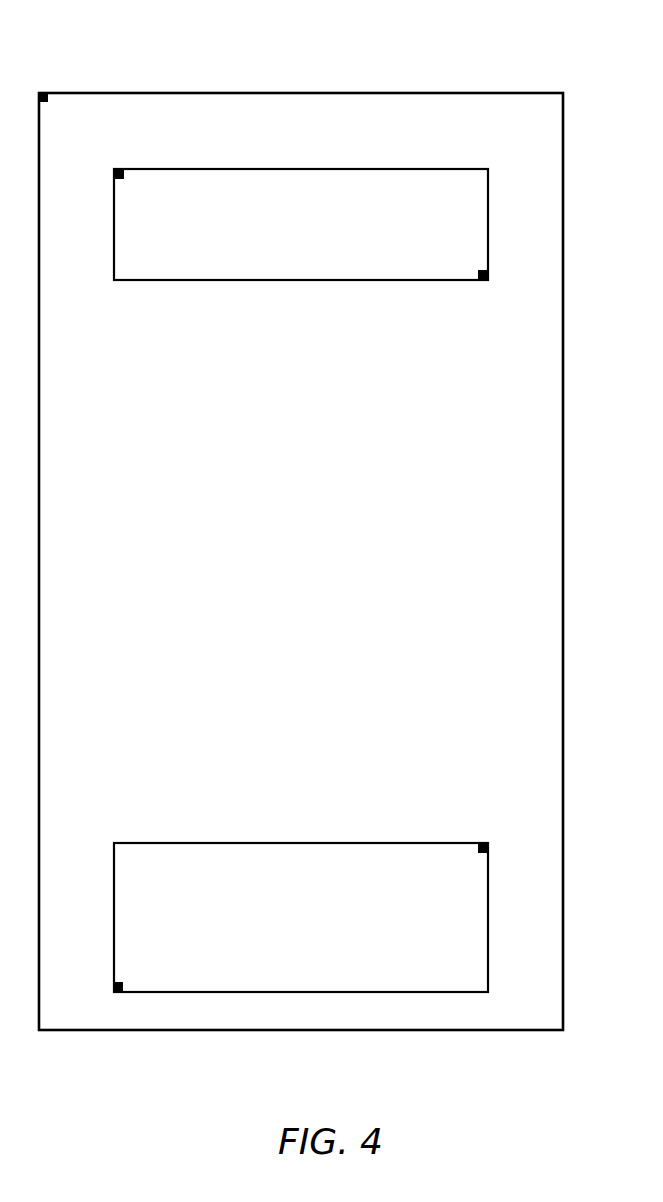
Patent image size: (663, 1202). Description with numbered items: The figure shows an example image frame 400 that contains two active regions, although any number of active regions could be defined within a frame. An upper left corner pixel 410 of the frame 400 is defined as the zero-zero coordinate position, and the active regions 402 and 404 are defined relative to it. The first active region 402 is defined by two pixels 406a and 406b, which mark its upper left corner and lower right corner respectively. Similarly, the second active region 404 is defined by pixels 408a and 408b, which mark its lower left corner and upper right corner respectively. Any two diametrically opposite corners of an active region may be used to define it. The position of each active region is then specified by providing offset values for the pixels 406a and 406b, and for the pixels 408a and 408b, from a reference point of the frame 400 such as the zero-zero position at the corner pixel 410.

The frame 400 is at (316, 518).
The upper left corner pixel 410 is at (46, 100).
The active region 402 is at (163, 282).
The active region 404 is at (227, 843).
The pixel 406a is at (121, 180).
The pixel 406b is at (481, 270).
The pixel 408a is at (119, 981).
The pixel 408b is at (481, 843).